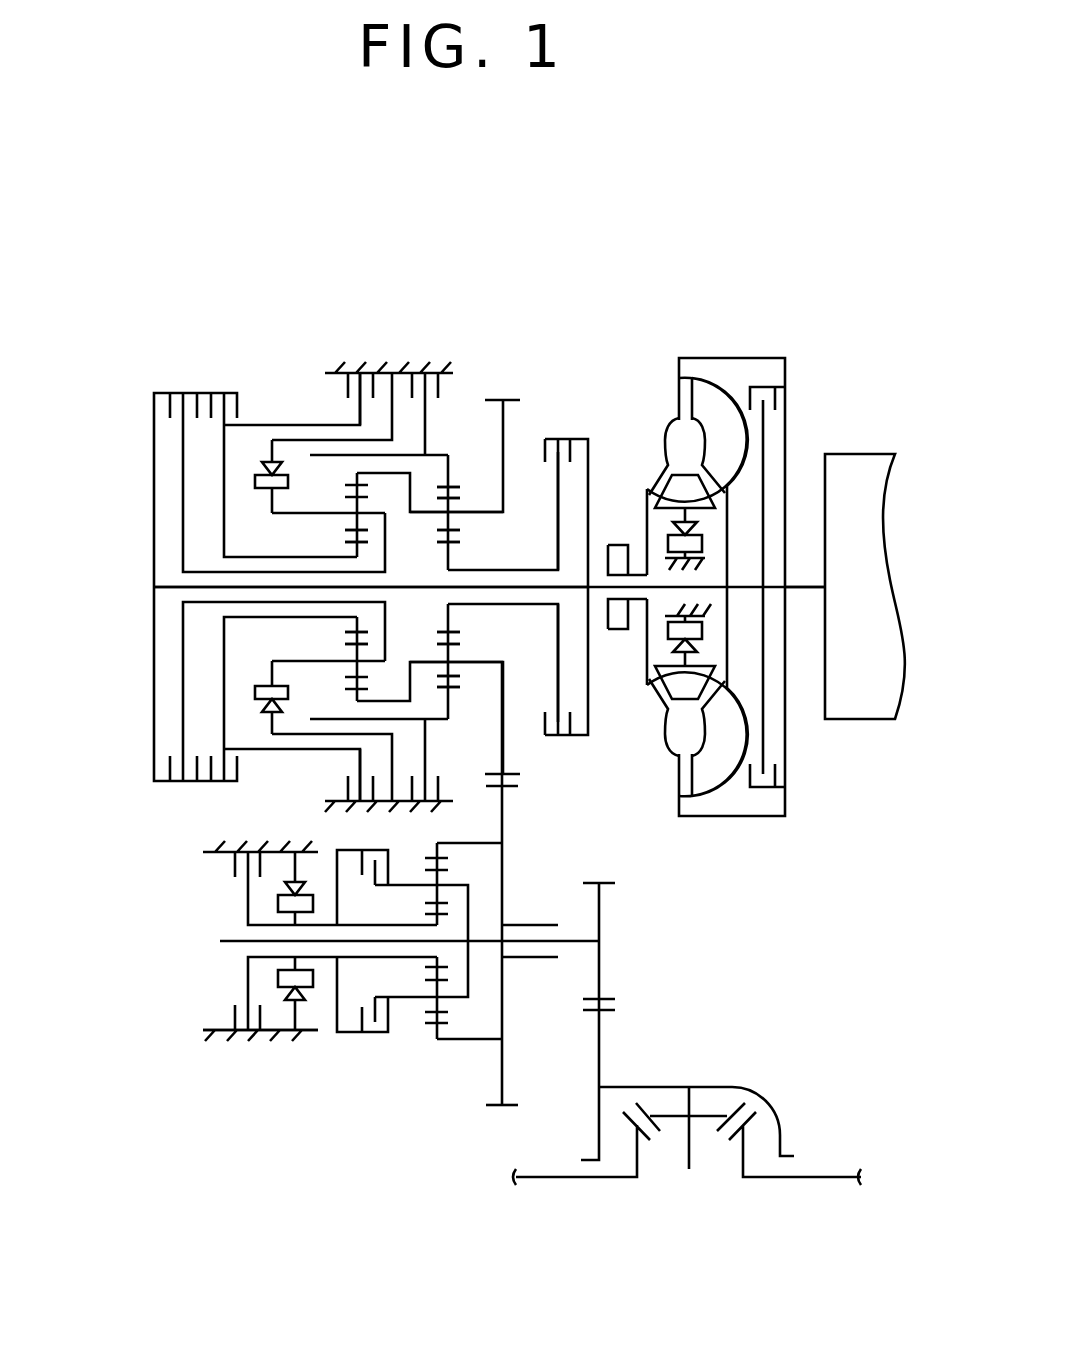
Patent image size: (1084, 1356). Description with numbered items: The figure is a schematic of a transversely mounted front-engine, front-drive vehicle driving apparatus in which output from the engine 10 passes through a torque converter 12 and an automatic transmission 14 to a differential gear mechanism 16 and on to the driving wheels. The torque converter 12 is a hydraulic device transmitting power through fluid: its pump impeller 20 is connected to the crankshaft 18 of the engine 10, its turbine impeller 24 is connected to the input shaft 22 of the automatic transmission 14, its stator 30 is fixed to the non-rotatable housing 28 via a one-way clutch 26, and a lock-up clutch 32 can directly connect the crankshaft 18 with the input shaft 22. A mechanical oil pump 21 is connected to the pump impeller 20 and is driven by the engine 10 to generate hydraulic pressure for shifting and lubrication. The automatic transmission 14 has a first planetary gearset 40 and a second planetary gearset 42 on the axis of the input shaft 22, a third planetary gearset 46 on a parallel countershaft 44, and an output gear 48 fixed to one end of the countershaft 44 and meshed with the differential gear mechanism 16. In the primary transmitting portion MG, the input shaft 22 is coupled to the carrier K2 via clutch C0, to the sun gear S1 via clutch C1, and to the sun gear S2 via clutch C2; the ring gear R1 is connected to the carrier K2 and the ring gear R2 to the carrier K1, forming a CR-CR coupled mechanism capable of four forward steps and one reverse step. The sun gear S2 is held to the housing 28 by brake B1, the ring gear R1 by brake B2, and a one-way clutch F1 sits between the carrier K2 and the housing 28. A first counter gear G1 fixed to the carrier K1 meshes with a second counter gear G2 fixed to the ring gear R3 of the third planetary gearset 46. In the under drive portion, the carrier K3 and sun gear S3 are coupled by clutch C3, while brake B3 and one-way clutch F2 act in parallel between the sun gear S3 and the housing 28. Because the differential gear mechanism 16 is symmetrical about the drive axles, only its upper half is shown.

The engine 10 is at (863, 475).
The torque converter 12 is at (768, 318).
The automatic transmission 14 is at (533, 278).
The differential gear mechanism 16 is at (727, 1034).
The crankshaft 18 is at (805, 592).
The pump impeller 20 is at (662, 400).
The mechanical oil pump 21 is at (618, 560).
The input shaft 22 is at (527, 592).
The turbine impeller 24 is at (715, 777).
The one-way clutch 26 is at (618, 735).
The housing 28 is at (395, 362).
The stator 30 is at (672, 495).
The lock-up clutch 32 is at (778, 400).
The first planetary gearset 40 is at (466, 402).
The second planetary gearset 42 is at (341, 462).
The countershaft 44 is at (232, 941).
The third planetary gearset 46 is at (440, 1056).
The output gear 48 is at (604, 998).
The primary transmitting portion MG is at (108, 727).
The clutch C0 is at (271, 569).
The clutch C1 is at (562, 569).
The clutch C2 is at (283, 579).
The clutch C3 is at (368, 963).
The brake B1 is at (332, 561).
The brake B2 is at (433, 561).
The brake B3 is at (333, 969).
The one-way clutch F1 is at (260, 579).
The one-way clutch F2 is at (296, 984).
The ring gear R1 is at (461, 484).
The ring gear R2 is at (372, 480).
The ring gear R3 is at (437, 858).
The sun gear S1 is at (452, 545).
The sun gear S2 is at (350, 545).
The sun gear S3 is at (437, 912).
The carrier K1 is at (476, 514).
The carrier K2 is at (340, 515).
The carrier K3 is at (456, 880).
The first counter gear G1 is at (516, 772).
The second counter gear G2 is at (512, 1100).